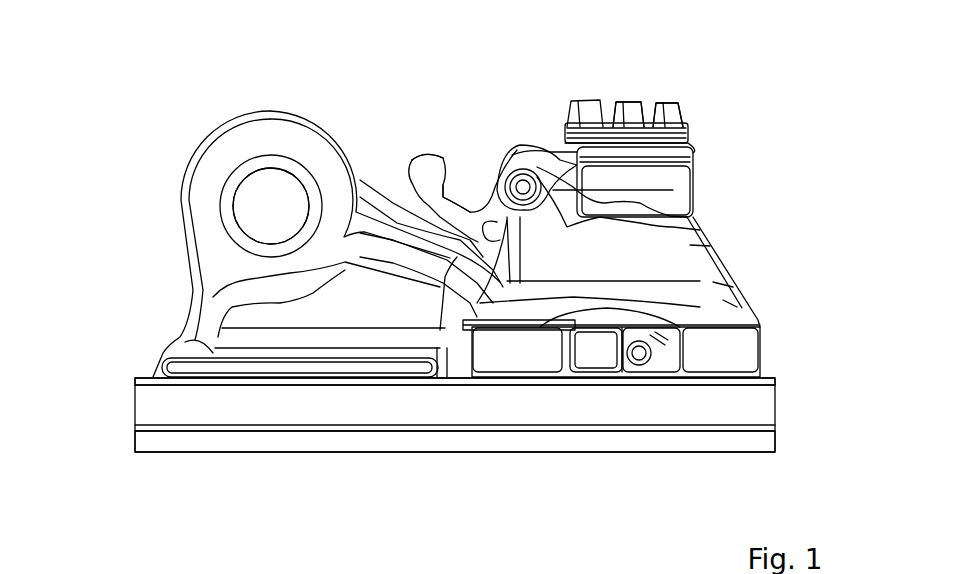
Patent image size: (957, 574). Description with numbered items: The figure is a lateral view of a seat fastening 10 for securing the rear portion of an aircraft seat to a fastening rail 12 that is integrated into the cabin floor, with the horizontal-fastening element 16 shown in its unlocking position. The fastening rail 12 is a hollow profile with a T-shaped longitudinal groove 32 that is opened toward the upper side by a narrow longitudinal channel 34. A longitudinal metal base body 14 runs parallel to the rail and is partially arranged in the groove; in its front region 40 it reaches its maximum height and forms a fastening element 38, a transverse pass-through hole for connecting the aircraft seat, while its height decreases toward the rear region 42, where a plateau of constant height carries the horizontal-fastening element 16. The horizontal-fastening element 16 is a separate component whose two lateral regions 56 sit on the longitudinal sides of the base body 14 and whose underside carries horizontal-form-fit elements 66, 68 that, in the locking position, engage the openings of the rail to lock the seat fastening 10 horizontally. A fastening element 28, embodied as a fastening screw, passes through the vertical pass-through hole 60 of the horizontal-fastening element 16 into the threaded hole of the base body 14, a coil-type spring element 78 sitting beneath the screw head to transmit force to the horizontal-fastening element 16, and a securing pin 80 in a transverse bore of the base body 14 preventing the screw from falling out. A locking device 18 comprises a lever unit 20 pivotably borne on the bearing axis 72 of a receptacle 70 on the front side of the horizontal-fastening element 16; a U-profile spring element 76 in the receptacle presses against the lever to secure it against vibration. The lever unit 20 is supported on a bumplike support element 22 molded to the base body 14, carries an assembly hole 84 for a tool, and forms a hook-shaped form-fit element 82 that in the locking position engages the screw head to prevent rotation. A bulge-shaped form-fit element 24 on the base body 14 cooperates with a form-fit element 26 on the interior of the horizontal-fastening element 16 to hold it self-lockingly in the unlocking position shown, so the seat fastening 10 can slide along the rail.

The seat fastening 10 is at (230, 100).
The fastening rail 12 is at (272, 442).
The base body 14 is at (378, 295).
The horizontal-fastening element 16 is at (677, 247).
The locking device 18 is at (465, 113).
The lever unit 20 is at (465, 220).
The support element 22 is at (465, 262).
The form-fit element 24 is at (656, 341).
The form-fit element 26 is at (662, 352).
The fastening element 28 is at (687, 125).
The T-shaped longitudinal groove 32 is at (126, 425).
The longitudinal channel 34 is at (129, 384).
The fastening element 38 is at (235, 197).
The front region 40 is at (270, 96).
The rear region 42 is at (633, 86).
The lateral region 56 is at (727, 293).
The pass-through hole 60 is at (652, 99).
The horizontal-form-fit element 66 is at (500, 345).
The horizontal-form-fit element 68 is at (737, 353).
The receptacle 70 is at (510, 139).
The bearing axis 72 is at (537, 141).
The spring element 76 is at (543, 135).
The spring element 78 is at (683, 147).
The securing pin 80 is at (640, 365).
The form-fit element 82 is at (430, 177).
The assembly hole 84 is at (483, 300).